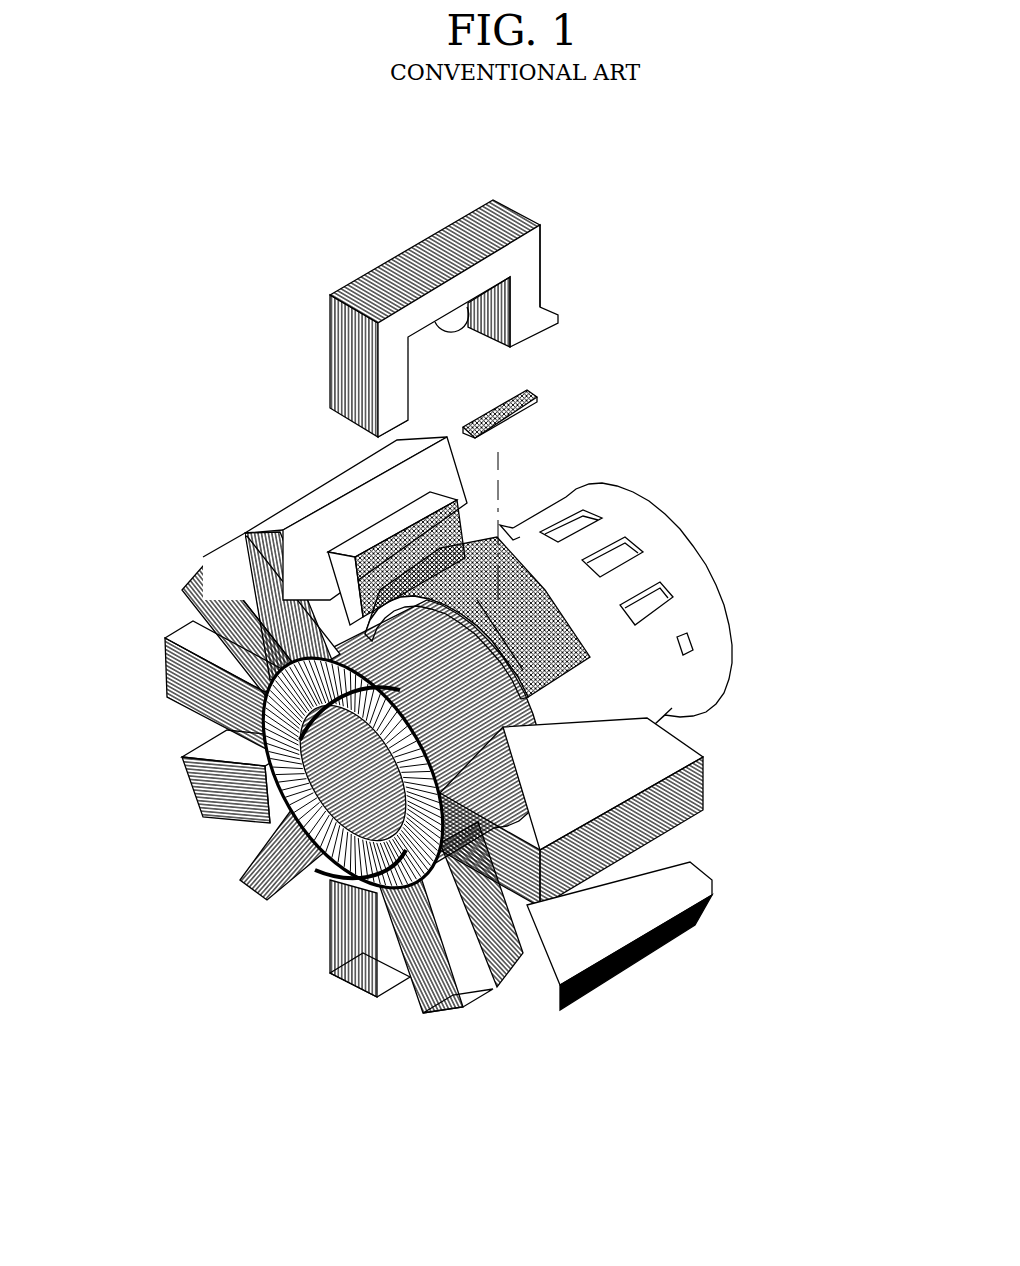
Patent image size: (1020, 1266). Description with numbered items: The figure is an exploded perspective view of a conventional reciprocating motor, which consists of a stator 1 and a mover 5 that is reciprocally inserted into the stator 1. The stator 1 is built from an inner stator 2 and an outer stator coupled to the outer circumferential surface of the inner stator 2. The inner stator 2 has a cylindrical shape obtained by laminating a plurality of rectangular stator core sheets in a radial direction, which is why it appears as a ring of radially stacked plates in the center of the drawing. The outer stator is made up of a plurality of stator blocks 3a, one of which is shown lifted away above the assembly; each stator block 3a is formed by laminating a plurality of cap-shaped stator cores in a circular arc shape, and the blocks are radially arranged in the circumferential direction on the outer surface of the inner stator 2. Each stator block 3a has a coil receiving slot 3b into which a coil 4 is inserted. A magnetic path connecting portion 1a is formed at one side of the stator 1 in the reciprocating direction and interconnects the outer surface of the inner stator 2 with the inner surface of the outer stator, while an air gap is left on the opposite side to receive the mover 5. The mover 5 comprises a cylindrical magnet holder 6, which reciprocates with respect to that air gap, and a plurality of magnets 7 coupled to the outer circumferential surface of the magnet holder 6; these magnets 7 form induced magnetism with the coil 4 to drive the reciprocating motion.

The stator 1 is at (406, 742).
The magnetic path connecting portion 1a is at (330, 430).
The inner stator 2 is at (232, 733).
The stator block 3a is at (530, 275).
The coil receiving slot 3b is at (462, 312).
The coil 4 is at (387, 540).
The mover 5 is at (616, 568).
The magnet holder 6 is at (620, 515).
The magnet 7 is at (500, 428).